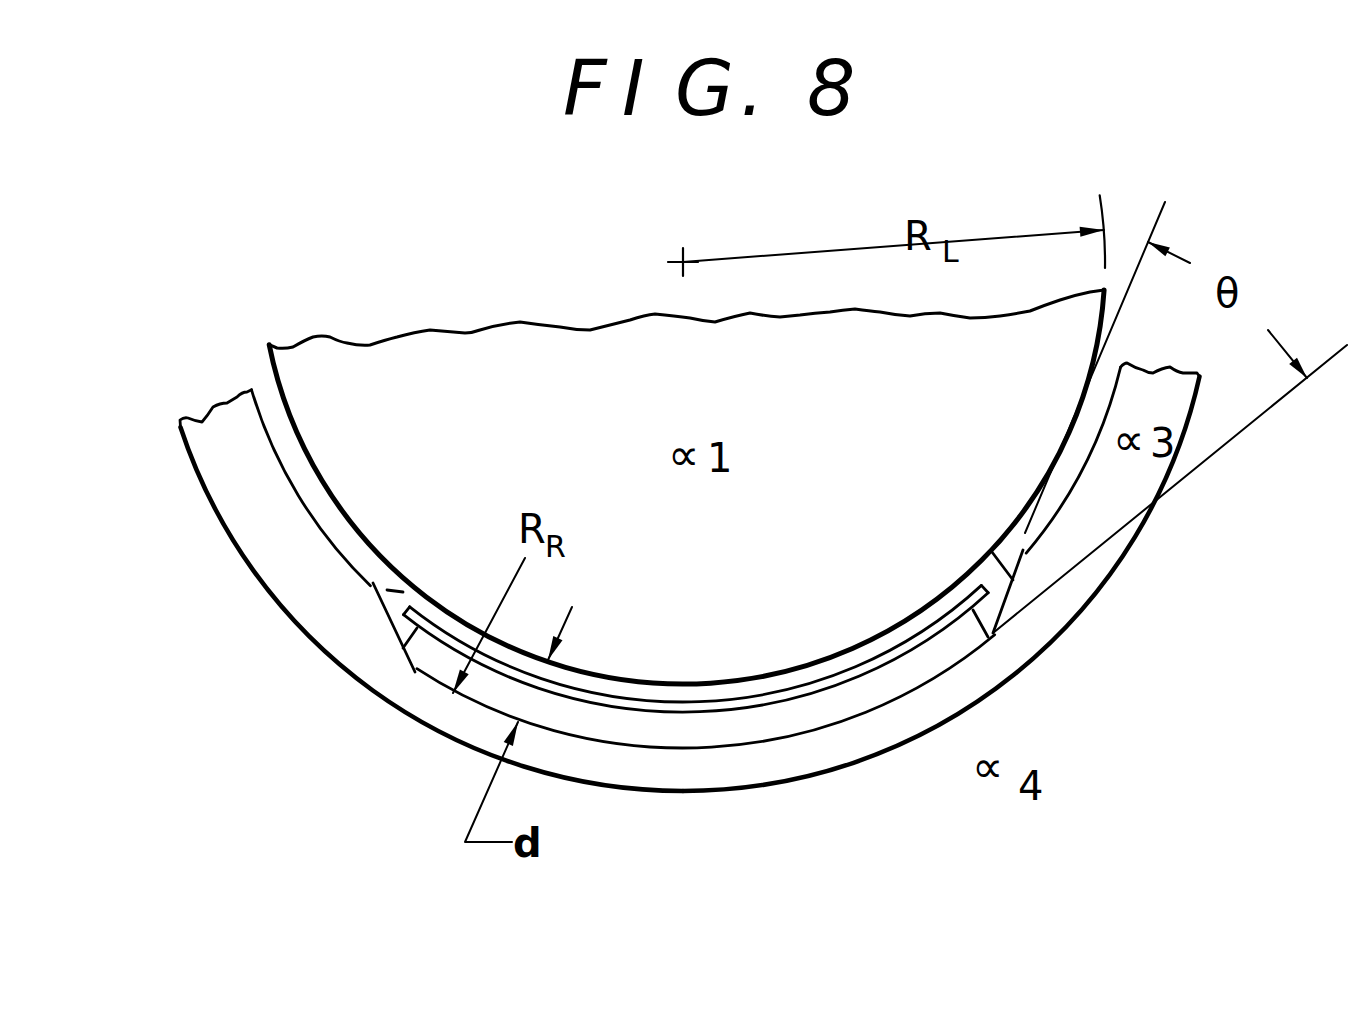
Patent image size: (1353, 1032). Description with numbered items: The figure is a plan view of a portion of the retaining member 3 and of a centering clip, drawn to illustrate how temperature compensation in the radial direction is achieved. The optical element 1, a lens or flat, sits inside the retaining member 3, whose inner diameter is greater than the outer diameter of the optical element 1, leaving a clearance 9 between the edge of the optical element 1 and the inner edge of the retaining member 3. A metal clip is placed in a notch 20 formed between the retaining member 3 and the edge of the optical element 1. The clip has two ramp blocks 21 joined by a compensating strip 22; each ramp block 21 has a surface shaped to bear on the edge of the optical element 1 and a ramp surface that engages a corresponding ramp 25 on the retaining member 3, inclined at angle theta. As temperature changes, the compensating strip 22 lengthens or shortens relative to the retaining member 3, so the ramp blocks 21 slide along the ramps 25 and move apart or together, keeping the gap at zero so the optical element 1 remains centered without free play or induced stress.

The optical element 1 is at (418, 377).
The retaining member 3 is at (1117, 483).
The clearance 9 is at (300, 472).
The notch 20 is at (797, 718).
The ramp block 21 is at (396, 589).
The compensating strip 22 is at (676, 708).
The ramp 25 is at (392, 628).